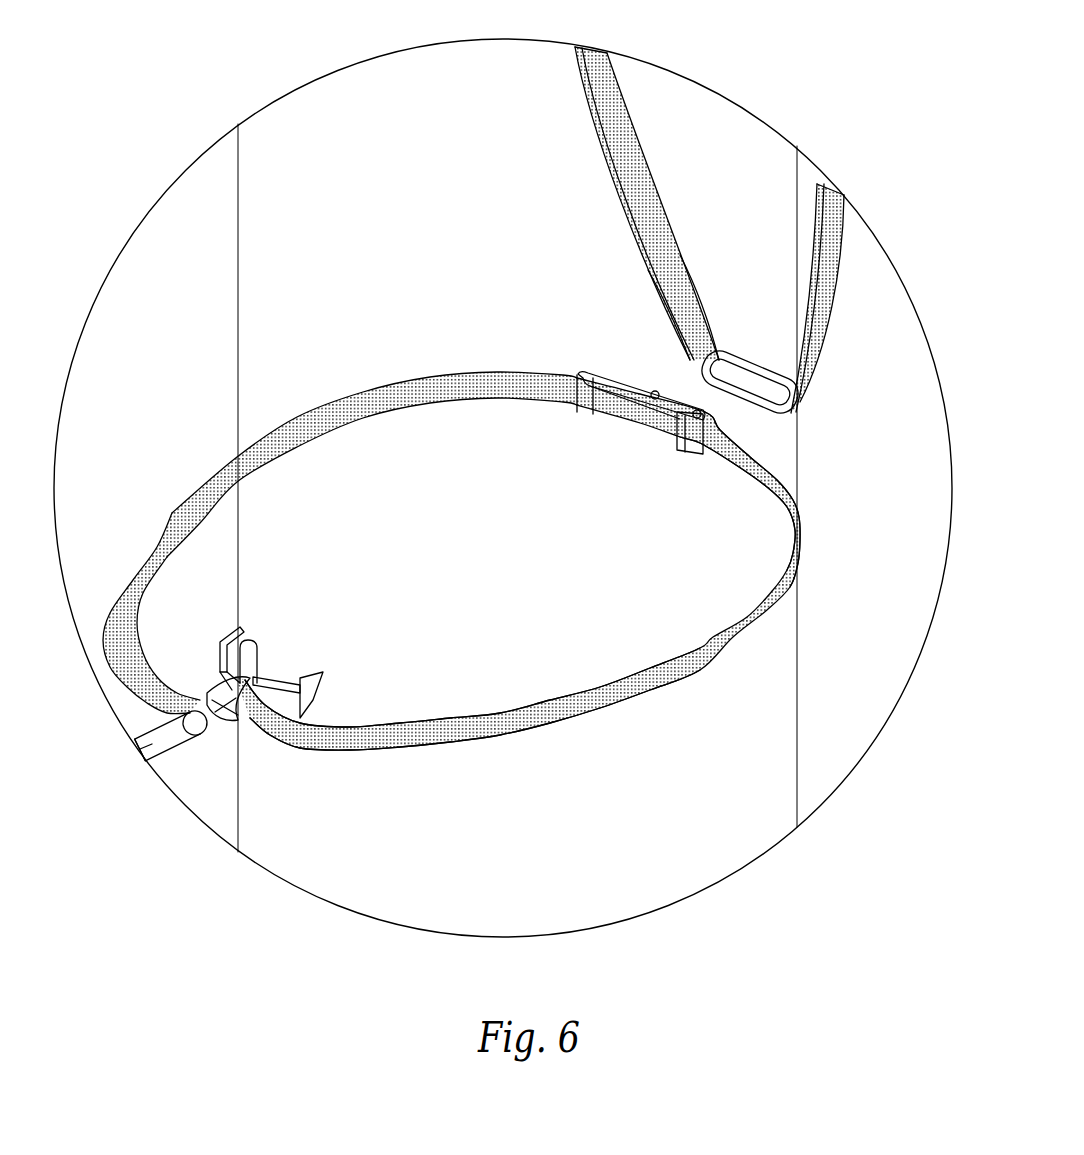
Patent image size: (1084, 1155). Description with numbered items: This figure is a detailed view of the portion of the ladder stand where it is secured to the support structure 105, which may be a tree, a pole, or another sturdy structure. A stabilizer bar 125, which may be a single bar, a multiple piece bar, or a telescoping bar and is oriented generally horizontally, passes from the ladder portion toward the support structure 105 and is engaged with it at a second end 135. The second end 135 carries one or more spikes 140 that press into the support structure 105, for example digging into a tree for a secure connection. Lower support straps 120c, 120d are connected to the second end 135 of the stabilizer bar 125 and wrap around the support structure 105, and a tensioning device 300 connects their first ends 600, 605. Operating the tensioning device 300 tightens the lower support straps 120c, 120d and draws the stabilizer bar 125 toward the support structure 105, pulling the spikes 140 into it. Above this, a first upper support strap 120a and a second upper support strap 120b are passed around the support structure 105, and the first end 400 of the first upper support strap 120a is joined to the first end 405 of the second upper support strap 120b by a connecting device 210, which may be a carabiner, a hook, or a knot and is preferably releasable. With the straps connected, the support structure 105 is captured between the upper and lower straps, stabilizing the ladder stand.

The support structure 105 is at (272, 135).
The first upper support strap 120a is at (597, 105).
The second upper support strap 120b is at (840, 268).
The lower support strap 120c is at (205, 490).
The lower support strap 120d is at (530, 713).
The stabilizer bar 125 is at (163, 740).
The second end 135 is at (147, 730).
The spikes 140 is at (238, 640).
The connecting device 210 is at (750, 345).
The tensioning device 300 is at (607, 399).
The first end 400 is at (680, 305).
The first end 405 is at (830, 342).
The first end 600 is at (455, 386).
The first end 605 is at (742, 465).